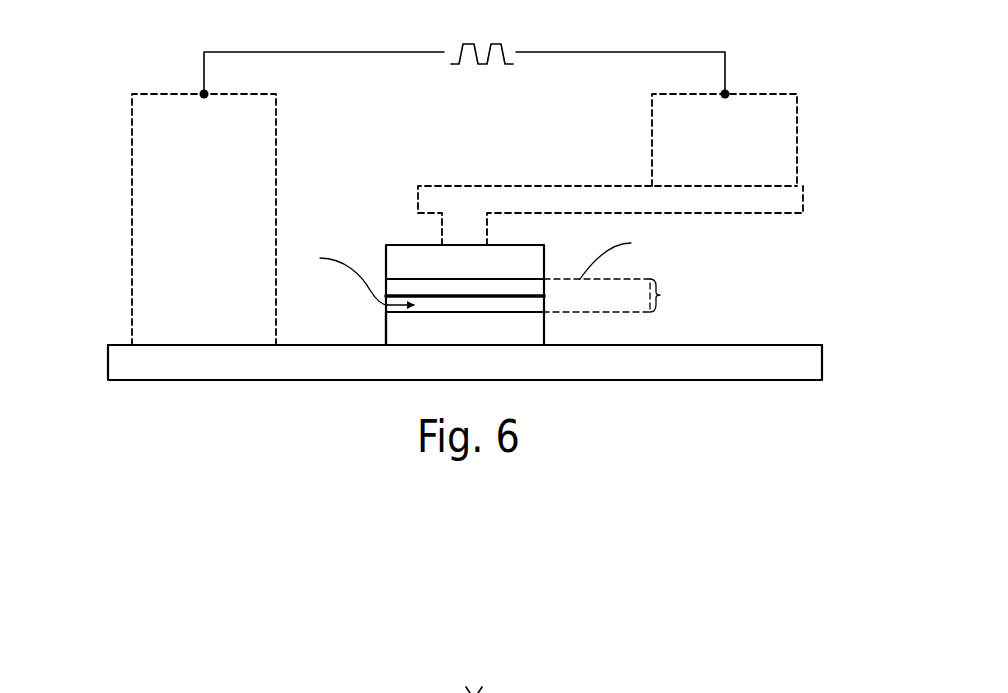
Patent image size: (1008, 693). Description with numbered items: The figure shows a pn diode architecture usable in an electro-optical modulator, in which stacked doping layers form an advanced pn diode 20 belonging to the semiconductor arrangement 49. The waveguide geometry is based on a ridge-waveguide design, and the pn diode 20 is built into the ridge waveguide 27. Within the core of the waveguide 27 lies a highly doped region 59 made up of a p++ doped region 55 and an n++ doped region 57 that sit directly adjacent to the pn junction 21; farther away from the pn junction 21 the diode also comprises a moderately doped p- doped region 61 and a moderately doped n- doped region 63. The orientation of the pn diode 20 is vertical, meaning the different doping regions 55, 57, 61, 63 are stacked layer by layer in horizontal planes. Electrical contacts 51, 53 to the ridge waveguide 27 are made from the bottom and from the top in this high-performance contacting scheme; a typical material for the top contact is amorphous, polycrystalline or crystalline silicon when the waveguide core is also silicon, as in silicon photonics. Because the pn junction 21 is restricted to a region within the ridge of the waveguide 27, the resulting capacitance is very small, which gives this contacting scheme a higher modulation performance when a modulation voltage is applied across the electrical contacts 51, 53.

The pn diode 20 is at (779, 291).
The pn junction 21 is at (526, 291).
The waveguide 27 is at (580, 333).
The semiconductor arrangement 49 is at (307, 341).
The electrical contact 51 is at (150, 176).
The electrical contact 53 is at (783, 160).
The p++ doped region 55 is at (392, 286).
The n++ doped region 57 is at (386, 297).
The highly doped region 59 is at (618, 295).
The p- doped region 61 is at (428, 253).
The n- doped region 63 is at (386, 334).